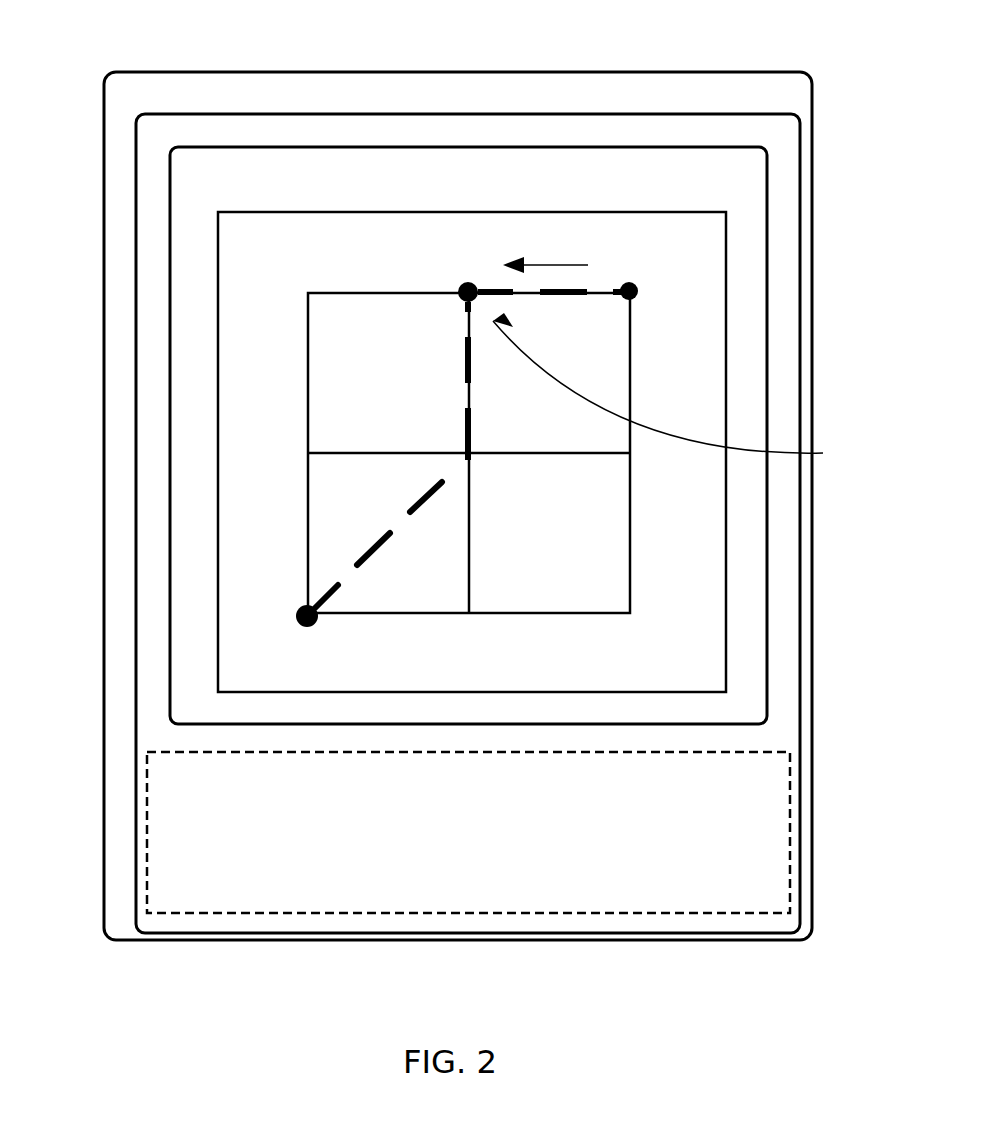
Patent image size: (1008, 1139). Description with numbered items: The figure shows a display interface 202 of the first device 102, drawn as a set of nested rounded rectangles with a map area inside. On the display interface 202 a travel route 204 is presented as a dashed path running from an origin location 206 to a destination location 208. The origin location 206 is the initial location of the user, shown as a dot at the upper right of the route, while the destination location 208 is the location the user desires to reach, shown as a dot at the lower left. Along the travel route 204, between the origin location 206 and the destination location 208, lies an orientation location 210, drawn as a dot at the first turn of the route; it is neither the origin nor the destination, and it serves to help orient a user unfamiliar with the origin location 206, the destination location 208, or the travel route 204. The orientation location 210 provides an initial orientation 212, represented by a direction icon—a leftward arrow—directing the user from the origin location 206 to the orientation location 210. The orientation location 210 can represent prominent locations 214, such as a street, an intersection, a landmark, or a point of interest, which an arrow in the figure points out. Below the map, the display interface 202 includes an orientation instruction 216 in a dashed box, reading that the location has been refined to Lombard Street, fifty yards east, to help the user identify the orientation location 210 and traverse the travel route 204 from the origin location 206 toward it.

The first device 102 is at (241, 93).
The display interface 202 is at (353, 133).
The travel route 204 is at (413, 502).
The origin location 206 is at (636, 288).
The destination location 208 is at (300, 605).
The orientation location 210 is at (468, 283).
The initial orientation 212 is at (548, 265).
The prominent locations 214 is at (682, 387).
The orientation instruction 216 is at (143, 797).